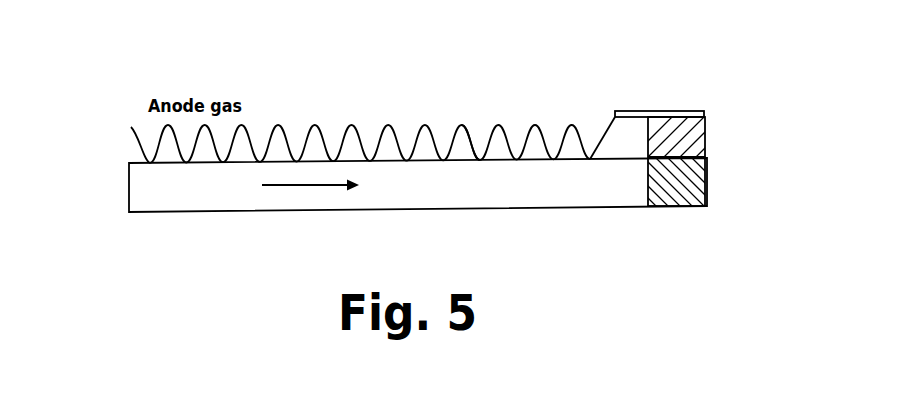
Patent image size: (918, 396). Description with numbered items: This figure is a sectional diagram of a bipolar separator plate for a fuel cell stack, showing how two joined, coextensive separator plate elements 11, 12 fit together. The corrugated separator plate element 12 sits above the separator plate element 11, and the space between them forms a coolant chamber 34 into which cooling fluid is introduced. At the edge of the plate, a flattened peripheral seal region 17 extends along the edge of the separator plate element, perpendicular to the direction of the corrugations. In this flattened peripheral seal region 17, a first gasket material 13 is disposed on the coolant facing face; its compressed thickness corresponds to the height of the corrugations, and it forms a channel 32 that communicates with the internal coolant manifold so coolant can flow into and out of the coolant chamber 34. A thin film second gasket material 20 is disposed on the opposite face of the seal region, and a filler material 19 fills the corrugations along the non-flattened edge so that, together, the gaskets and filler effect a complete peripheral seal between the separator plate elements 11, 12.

The separator plate element 11 is at (128, 190).
The separator plate element 12 is at (279, 126).
The coolant chamber 34 is at (464, 145).
The channel 32 is at (625, 132).
The second gasket material 20 is at (662, 117).
The first gasket material 13 is at (707, 142).
The flattened peripheral seal region 17 is at (707, 131).
The filler material 19 is at (707, 183).